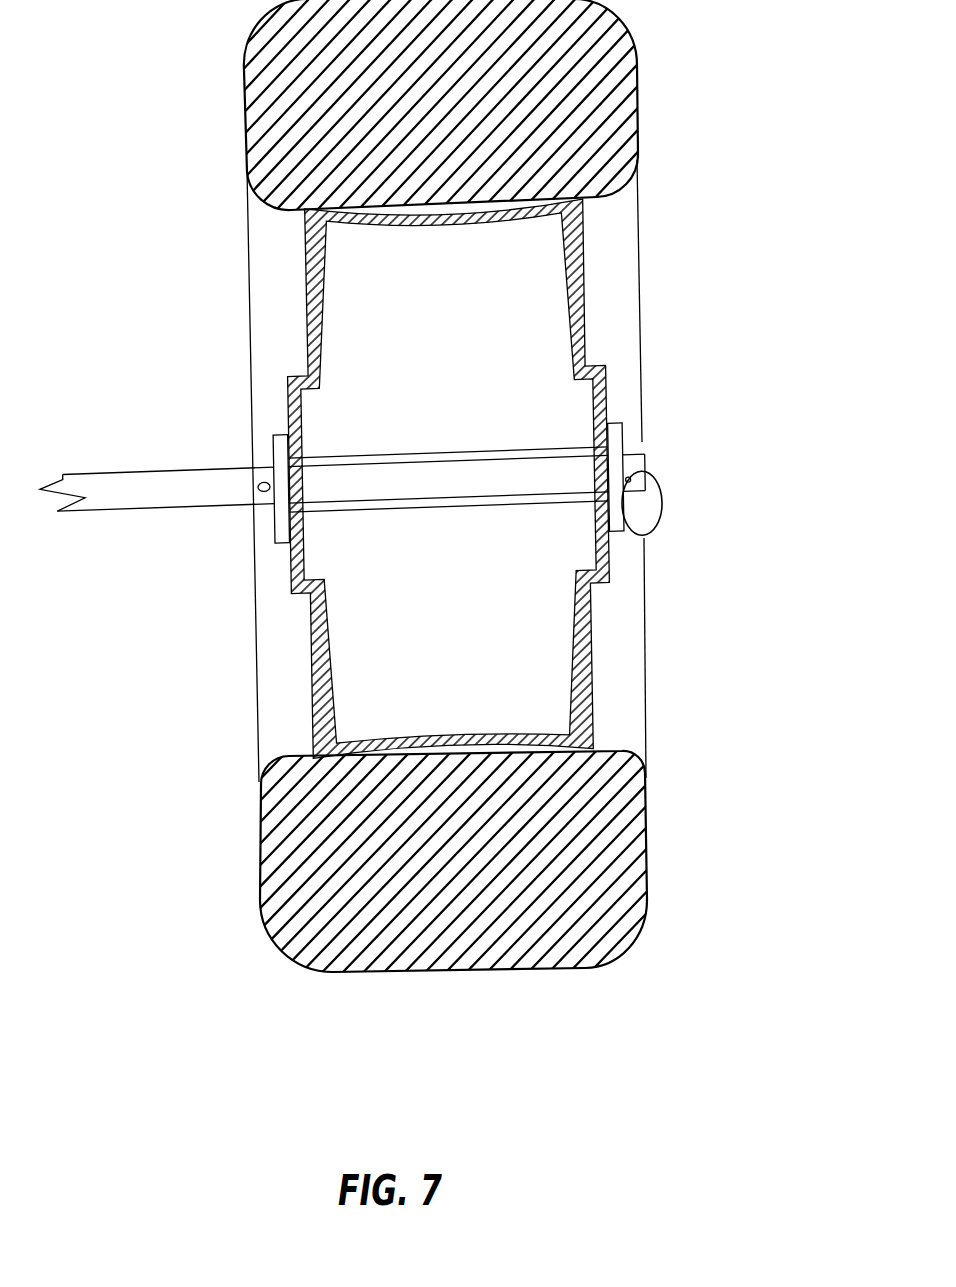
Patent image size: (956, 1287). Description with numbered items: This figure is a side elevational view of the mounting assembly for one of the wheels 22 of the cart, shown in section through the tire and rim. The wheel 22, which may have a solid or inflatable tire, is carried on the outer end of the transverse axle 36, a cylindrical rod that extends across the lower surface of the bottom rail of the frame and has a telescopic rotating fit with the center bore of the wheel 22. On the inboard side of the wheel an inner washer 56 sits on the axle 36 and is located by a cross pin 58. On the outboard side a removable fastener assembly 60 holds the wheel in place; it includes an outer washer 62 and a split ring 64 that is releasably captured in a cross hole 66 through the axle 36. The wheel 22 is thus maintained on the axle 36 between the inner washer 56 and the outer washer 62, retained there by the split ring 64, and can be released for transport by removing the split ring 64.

The wheel 22 is at (472, 960).
The axle 36 is at (148, 497).
The inner washer 56 is at (273, 452).
The cross pin 58 is at (261, 488).
The removable fastener assembly 60 is at (733, 488).
The outer washer 62 is at (613, 438).
The split ring 64 is at (662, 493).
The cross hole 66 is at (742, 442).